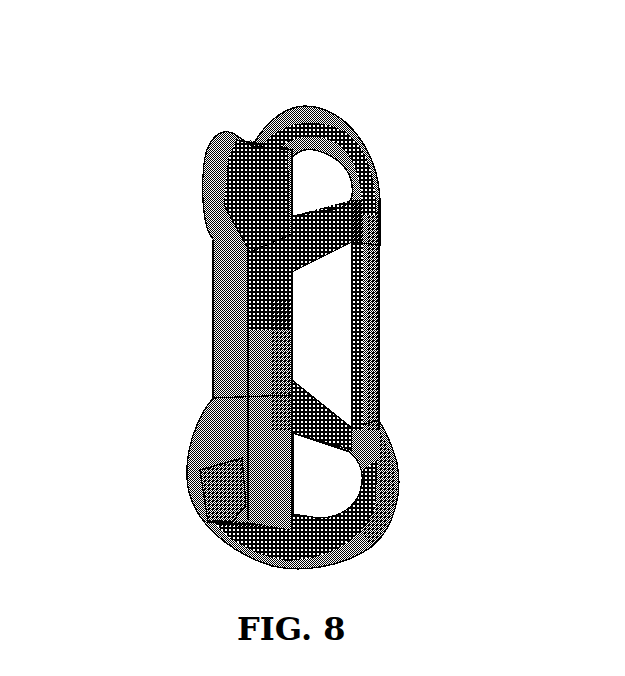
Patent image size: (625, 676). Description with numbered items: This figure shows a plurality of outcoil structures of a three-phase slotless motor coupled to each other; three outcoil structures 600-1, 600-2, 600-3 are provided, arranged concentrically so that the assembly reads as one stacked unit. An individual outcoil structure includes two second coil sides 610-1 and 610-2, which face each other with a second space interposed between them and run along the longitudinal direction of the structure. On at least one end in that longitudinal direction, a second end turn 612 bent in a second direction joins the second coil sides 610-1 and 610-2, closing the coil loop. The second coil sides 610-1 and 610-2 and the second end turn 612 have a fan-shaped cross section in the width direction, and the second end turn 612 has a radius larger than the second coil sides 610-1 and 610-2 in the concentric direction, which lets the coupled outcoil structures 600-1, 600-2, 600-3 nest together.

The outcoil structure 600-1 is at (265, 268).
The outcoil structure 600-2 is at (347, 105).
The outcoil structure 600-3 is at (195, 143).
The second coil side 610-1 is at (375, 355).
The second coil side 610-2 is at (240, 527).
The second end turn 612 is at (387, 518).